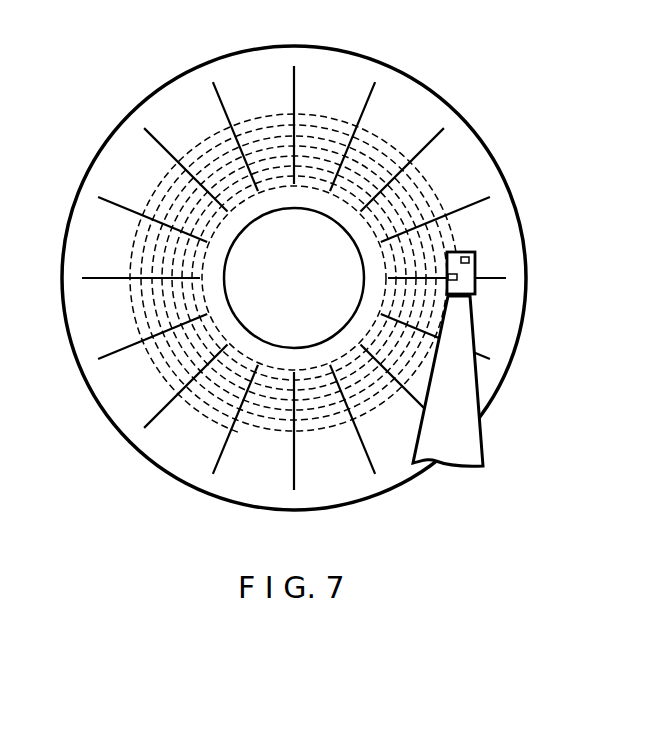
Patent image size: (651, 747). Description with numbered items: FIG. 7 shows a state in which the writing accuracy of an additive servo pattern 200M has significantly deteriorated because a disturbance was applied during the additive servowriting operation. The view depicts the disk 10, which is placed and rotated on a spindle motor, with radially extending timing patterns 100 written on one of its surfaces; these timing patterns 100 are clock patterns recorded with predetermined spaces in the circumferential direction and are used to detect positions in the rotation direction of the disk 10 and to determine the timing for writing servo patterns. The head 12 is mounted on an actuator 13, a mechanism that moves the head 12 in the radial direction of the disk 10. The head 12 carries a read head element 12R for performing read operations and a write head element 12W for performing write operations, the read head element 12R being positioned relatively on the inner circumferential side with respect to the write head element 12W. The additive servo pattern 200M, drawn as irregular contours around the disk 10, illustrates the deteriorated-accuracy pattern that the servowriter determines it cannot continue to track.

The disk medium 10 is at (88, 385).
The timing patterns 100 is at (295, 81).
The additive servo pattern 200M is at (423, 180).
The head 12 is at (515, 288).
The write head element 12W is at (477, 258).
The read head element 12R is at (452, 292).
The actuator 13 is at (487, 441).